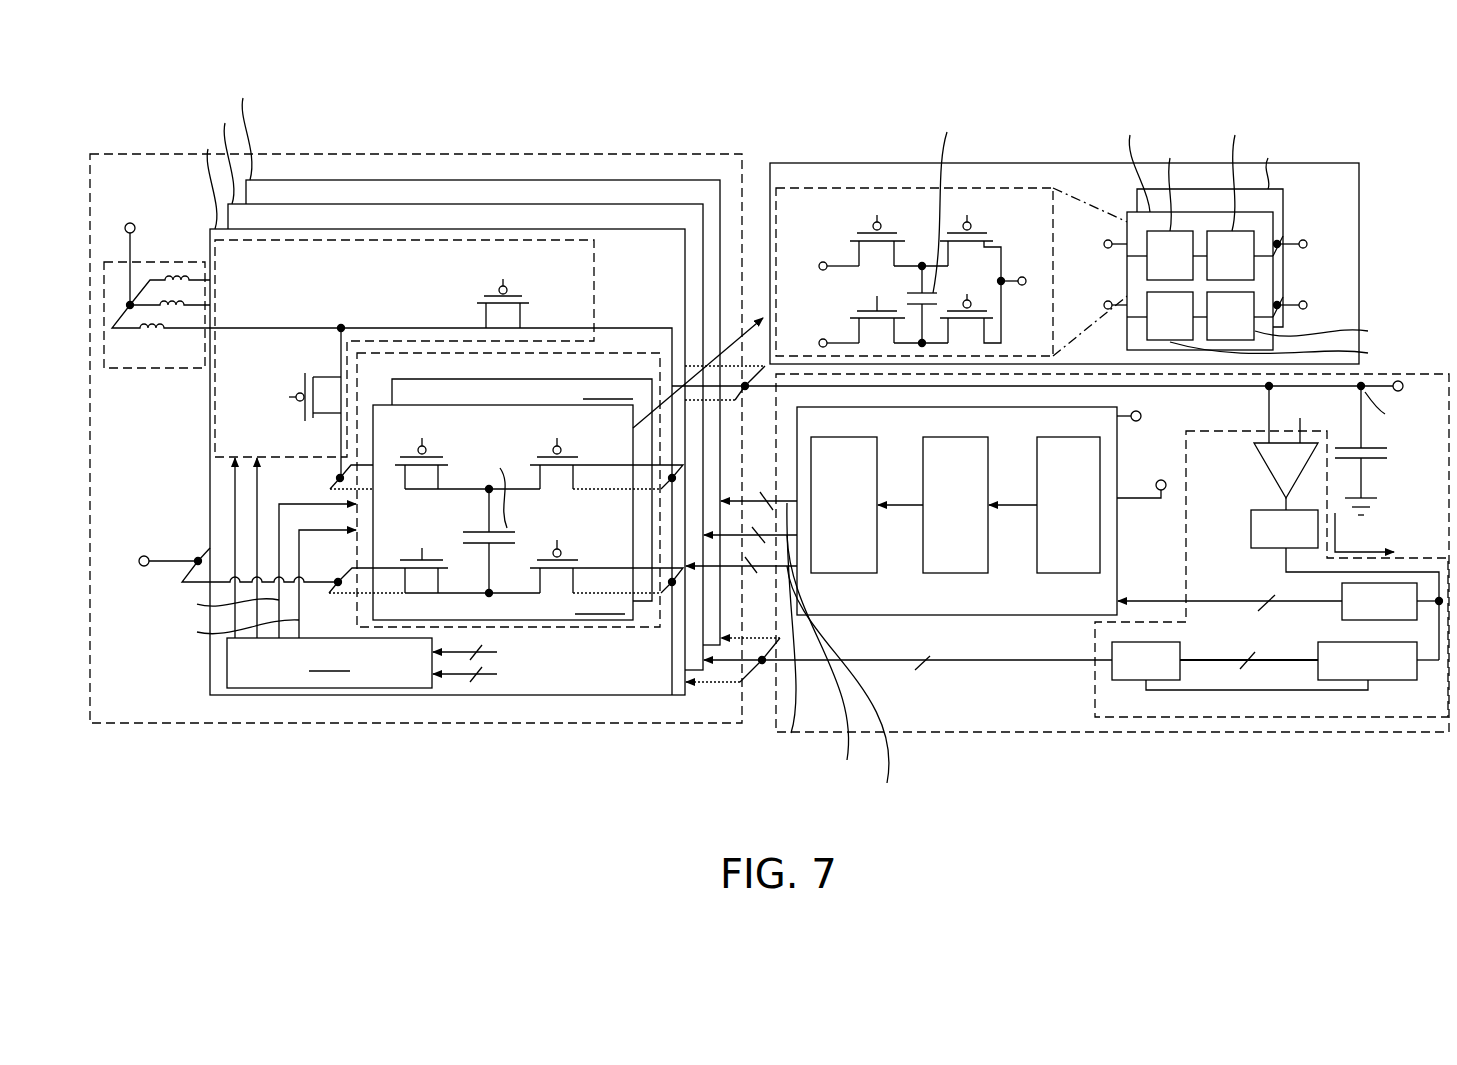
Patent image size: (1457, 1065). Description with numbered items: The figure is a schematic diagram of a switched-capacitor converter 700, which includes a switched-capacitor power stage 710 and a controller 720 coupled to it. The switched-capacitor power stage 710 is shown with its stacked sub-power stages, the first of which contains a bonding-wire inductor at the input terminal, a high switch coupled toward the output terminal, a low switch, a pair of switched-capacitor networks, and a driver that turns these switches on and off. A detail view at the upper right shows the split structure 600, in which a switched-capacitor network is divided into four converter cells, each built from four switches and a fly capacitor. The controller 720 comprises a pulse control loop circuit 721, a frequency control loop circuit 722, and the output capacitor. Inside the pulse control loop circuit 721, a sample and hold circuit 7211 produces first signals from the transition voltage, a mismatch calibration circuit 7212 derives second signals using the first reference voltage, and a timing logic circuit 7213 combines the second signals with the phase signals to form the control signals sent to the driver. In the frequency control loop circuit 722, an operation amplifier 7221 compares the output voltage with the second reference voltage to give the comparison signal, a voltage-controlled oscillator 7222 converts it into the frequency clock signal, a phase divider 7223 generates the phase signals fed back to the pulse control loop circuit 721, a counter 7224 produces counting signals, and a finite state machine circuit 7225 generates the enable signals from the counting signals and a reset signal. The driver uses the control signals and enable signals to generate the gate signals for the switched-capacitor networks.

The switched-capacitor converter 700 is at (132, 31).
The switched-capacitor power stage 710 is at (300, 154).
The split structure 600 is at (1033, 163).
The controller 720 is at (1397, 732).
The pulse control loop circuit 721 is at (1110, 604).
The sample and hold circuit 7211 is at (1090, 515).
The mismatch calibration circuit 7212 is at (977, 515).
The timing logic circuit 7213 is at (866, 515).
The frequency control loop circuit 722 is at (1358, 717).
The operation amplifier 7221 is at (1303, 468).
The voltage-controlled oscillator 7222 is at (1308, 538).
The phase divider 7223 is at (1401, 610).
The counter 7224 is at (1389, 669).
The finite state machine circuit 7225 is at (1168, 669).